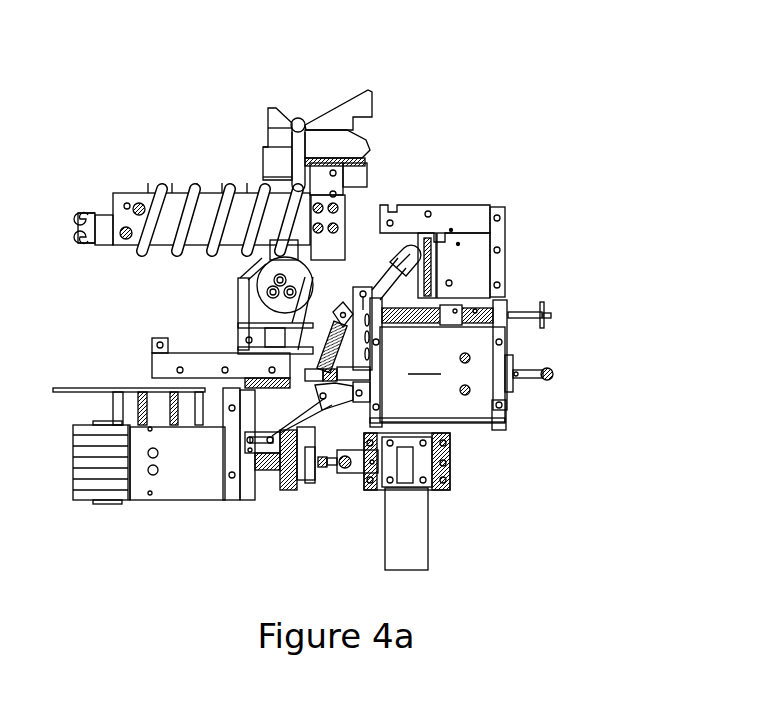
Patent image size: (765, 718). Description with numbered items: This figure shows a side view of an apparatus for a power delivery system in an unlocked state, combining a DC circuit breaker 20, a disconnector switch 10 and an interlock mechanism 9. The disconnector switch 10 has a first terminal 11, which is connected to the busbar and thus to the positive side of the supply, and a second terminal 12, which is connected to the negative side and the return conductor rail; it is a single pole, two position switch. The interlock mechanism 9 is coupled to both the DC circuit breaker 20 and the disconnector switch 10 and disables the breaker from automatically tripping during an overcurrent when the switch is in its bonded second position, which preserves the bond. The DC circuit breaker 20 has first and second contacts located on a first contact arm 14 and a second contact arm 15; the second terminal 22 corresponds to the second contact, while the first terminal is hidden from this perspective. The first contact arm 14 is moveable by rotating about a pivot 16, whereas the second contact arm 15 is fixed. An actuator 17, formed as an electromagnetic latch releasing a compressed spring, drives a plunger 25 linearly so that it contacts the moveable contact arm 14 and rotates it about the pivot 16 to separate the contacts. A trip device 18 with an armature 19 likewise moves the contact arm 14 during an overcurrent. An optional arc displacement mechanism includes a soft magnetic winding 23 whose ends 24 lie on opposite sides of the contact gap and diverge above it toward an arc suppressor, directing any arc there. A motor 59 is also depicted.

The interlock mechanism 9 is at (363, 290).
The disconnector switch 10 is at (146, 533).
The first terminal 11 is at (197, 477).
The second terminal 12 is at (323, 473).
The first contact arm 14 is at (272, 112).
The second contact arm 15 is at (313, 128).
The pivot 16 is at (262, 294).
The actuator 17 is at (460, 364).
The trip device 18 is at (458, 223).
The armature 19 is at (430, 265).
The DC circuit breaker 20 is at (203, 116).
The second terminal 22 is at (80, 220).
The soft magnetic winding 23 is at (162, 186).
The ends of the soft magnetic winding 24 is at (300, 118).
The plunger 25 is at (552, 372).
The motor 59 is at (412, 528).